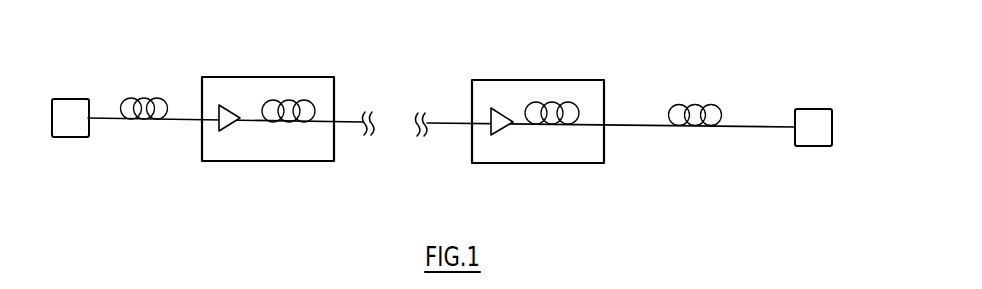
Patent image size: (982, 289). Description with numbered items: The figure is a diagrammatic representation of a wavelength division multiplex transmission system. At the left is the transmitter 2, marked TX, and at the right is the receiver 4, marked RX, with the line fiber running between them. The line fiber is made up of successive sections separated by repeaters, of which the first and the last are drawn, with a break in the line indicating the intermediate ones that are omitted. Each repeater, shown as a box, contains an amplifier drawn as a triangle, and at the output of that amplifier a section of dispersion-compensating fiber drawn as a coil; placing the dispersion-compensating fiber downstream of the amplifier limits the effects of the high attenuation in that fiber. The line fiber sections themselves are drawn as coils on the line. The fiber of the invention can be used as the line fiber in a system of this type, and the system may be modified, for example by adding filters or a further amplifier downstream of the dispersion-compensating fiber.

The transmitter 2 is at (71, 98).
The receiver 4 is at (818, 108).